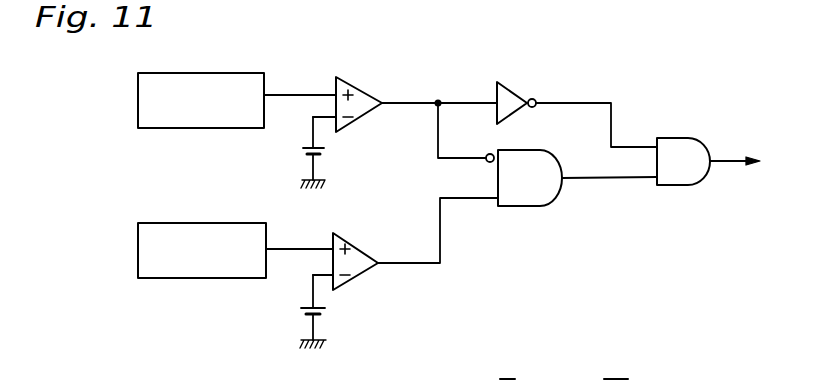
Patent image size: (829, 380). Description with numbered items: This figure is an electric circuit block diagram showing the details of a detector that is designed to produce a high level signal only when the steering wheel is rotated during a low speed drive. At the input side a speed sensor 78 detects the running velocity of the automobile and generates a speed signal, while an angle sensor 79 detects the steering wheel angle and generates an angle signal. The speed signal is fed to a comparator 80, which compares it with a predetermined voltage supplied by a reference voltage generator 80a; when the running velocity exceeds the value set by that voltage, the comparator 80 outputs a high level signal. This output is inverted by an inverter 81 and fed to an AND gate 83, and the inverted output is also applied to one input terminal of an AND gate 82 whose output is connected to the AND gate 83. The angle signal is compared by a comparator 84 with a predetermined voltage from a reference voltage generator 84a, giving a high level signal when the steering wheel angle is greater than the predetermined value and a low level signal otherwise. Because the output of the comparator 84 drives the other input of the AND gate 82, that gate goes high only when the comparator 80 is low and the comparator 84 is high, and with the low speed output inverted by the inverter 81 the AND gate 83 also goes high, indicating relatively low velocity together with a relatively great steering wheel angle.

The speed sensor 78 is at (141, 129).
The angle sensor 79 is at (217, 224).
The comparator 80 is at (364, 90).
The reference voltage generator 80a is at (327, 151).
The inverter 81 is at (513, 91).
The AND gate 82 is at (541, 200).
The AND gate 83 is at (683, 146).
The comparator 84 is at (360, 258).
The reference voltage generator 84a is at (322, 310).